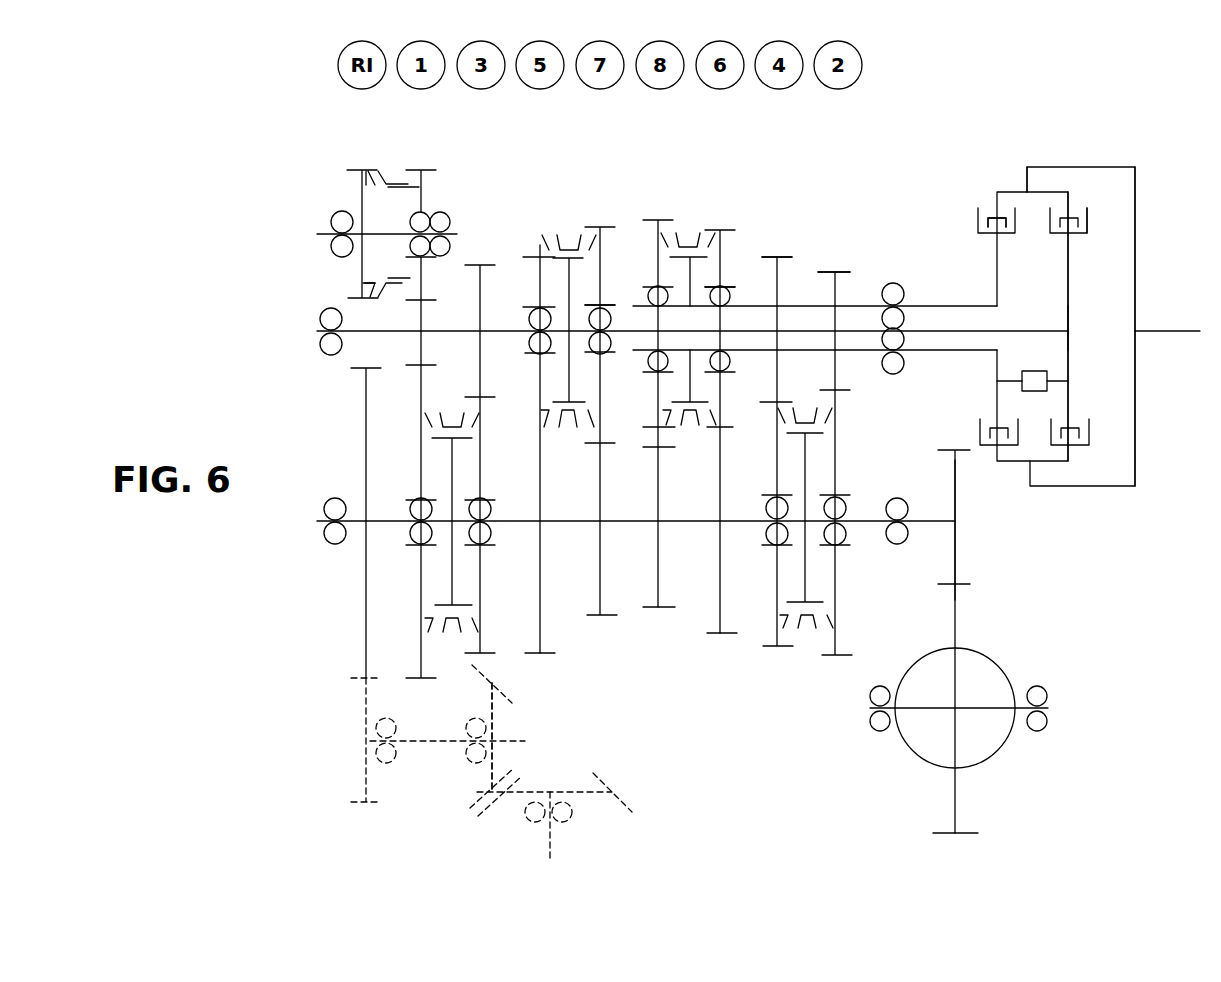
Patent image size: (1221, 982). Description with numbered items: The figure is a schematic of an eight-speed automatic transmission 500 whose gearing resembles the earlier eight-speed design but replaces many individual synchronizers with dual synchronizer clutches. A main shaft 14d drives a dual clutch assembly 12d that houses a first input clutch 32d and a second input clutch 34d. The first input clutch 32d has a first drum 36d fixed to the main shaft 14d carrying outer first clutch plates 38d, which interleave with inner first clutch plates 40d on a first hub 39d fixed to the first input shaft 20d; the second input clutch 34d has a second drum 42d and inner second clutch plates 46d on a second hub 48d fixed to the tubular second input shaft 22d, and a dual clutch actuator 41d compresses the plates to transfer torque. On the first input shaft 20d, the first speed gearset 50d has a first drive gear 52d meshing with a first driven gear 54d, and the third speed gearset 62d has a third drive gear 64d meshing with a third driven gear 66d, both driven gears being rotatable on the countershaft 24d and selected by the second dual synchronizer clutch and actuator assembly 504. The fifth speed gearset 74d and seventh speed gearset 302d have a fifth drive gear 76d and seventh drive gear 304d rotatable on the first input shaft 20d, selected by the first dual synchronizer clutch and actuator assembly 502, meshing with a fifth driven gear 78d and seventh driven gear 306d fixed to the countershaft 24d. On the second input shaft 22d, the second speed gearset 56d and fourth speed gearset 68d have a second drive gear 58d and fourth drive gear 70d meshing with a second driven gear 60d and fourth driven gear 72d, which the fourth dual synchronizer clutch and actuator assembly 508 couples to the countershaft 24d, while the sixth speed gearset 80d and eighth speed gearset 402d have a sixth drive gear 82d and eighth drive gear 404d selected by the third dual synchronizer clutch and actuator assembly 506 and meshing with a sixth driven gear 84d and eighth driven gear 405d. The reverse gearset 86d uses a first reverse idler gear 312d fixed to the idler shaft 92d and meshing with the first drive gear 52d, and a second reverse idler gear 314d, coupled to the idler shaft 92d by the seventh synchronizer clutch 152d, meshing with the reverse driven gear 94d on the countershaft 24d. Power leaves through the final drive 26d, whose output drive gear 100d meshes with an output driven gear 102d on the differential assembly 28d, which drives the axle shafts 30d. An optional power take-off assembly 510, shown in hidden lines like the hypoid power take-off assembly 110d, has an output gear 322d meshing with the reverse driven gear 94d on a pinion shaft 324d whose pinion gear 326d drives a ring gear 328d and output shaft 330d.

The eight speed automatic transmission 500 is at (214, 146).
The dual clutch assembly 12d is at (1071, 151).
The main shaft 14d is at (1163, 329).
The first input shaft 20d is at (1050, 328).
The second input shaft 22d is at (925, 305).
The countershaft 24d is at (925, 522).
The final drive 26d is at (974, 546).
The differential assembly 28d is at (1019, 774).
The axle shafts 30d is at (992, 708).
The first input clutch 32d is at (1114, 208).
The second input clutch 34d is at (972, 179).
The first drum 36d is at (1080, 207).
The outer first clutch plates 38d is at (1088, 220).
The first hub 39d is at (1068, 293).
The inner first clutch plates 40d is at (1058, 228).
The dual clutch actuator 41d is at (1047, 340).
The second drum 42d is at (1003, 192).
The inner second clutch plates 46d is at (1008, 226).
The second hub 48d is at (994, 240).
The first speed gearset 50d is at (418, 157).
The first drive gear 52d is at (421, 318).
The first driven gear 54d is at (421, 398).
The second speed gearset 56d is at (824, 255).
The second drive gear 58d is at (833, 293).
The second driven gear 60d is at (840, 390).
The third speed gearset 62d is at (472, 246).
The third drive gear 64d is at (480, 285).
The third driven gear 66d is at (480, 398).
The fourth speed gearset 68d is at (771, 250).
The fourth drive gear 70d is at (777, 293).
The fourth driven gear 72d is at (768, 401).
The fifth speed gearset 74d is at (538, 228).
The fifth drive gear 76d is at (539, 266).
The fifth driven gear 78d is at (573, 606).
The sixth speed gearset 80d is at (712, 216).
The sixth drive gear 82d is at (736, 258).
The sixth driven gear 84d is at (721, 597).
The reverse gearset 86d is at (359, 158).
The idler shaft 92d is at (317, 234).
The reverse driven gear 94d is at (366, 400).
The output drive gear 100d is at (955, 472).
The output driven gear 102d is at (957, 610).
The hypoid power take-off assembly 110d is at (342, 715).
The seventh synchronizer clutch 152d is at (373, 308).
The seventh speed gearset 302d is at (601, 206).
The seventh drive gear 304d is at (622, 268).
The seventh driven gear 306d is at (625, 510).
The first reverse idler gear 312d is at (362, 190).
The second reverse idler gear 314d is at (421, 178).
The output gear 322d is at (366, 778).
The pinion shaft 324d is at (438, 742).
The pinion gear 326d is at (492, 713).
The ring gear 328d is at (637, 763).
The output shaft 330d is at (550, 840).
The eighth speed gearset 402d is at (658, 208).
The eighth drive gear 404d is at (658, 229).
The eighth driven gear 405d is at (660, 590).
The first dual synchronizer clutch and actuator assembly 502 is at (572, 421).
The second dual synchronizer clutch and actuator assembly 504 is at (456, 637).
The third dual synchronizer clutch and actuator assembly 506 is at (690, 426).
The fourth dual synchronizer clutch and actuator assembly 508 is at (810, 629).
The power take-off assembly 510 is at (619, 701).